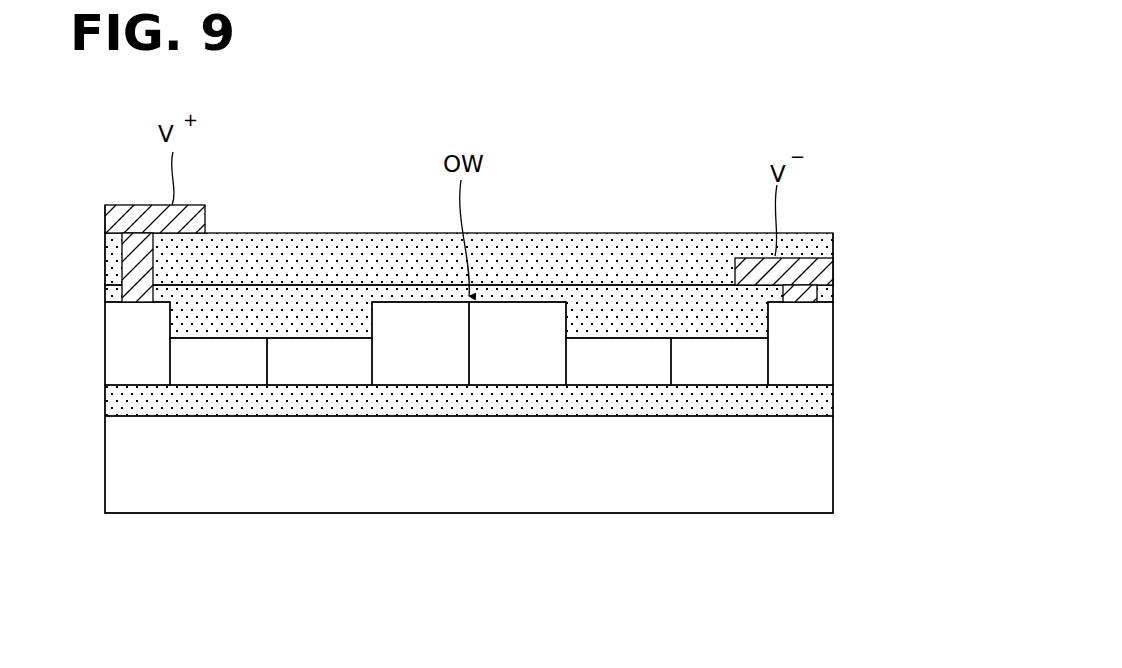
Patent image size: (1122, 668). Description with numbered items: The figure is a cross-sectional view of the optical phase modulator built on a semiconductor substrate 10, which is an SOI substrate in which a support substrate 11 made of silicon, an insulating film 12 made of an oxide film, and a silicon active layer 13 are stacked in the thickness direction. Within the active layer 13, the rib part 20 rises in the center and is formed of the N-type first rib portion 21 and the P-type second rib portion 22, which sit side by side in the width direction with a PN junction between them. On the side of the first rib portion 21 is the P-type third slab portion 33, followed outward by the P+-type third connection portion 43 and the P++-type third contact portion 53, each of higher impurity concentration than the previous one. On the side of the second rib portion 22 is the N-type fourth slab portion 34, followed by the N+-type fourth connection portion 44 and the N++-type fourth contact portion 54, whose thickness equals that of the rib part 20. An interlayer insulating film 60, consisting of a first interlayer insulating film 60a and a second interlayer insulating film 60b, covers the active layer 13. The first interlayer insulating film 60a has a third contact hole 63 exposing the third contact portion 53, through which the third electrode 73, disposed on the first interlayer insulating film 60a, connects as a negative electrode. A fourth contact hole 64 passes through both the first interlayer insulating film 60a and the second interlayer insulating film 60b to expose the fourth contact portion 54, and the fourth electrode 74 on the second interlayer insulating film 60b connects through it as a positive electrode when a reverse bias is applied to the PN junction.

The semiconductor substrate 10 is at (531, 460).
The support substrate 11 is at (820, 440).
The insulating film 12 is at (822, 397).
The active layer 13 is at (506, 460).
The rib part 20 is at (469, 460).
The first rib portion 21 is at (492, 375).
The second rib portion 22 is at (438, 377).
The third slab portion 33 is at (596, 375).
The fourth slab portion 34 is at (320, 377).
The third connection portion 43 is at (738, 375).
The fourth connection portion 44 is at (228, 377).
The third contact portion 53 is at (800, 375).
The fourth contact portion 54 is at (138, 377).
The interlayer insulating film 60 is at (532, 280).
The first interlayer insulating film 60a is at (828, 293).
The second interlayer insulating film 60b is at (822, 243).
The third contact hole 63 is at (793, 297).
The fourth contact hole 64 is at (124, 257).
The third electrode 73 is at (755, 268).
The fourth electrode 74 is at (120, 218).